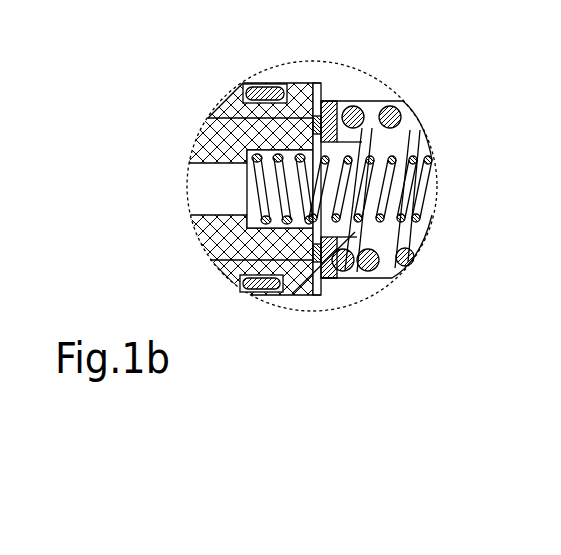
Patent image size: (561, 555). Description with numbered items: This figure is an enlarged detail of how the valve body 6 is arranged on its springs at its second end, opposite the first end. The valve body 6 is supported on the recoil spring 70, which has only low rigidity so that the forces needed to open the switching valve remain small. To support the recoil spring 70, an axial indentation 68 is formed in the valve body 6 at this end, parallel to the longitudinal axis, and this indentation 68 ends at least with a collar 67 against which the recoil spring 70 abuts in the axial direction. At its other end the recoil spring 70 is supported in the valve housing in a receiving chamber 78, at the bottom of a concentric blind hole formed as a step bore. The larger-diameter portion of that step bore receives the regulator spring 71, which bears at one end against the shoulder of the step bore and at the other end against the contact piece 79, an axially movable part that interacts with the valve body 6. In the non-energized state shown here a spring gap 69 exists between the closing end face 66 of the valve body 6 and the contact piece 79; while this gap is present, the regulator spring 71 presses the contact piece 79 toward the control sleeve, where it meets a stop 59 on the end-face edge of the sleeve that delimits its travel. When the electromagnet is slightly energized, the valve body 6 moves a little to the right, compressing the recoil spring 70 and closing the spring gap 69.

The valve body 6 is at (195, 237).
The axial indentation 68 is at (245, 282).
The collar 67 is at (247, 196).
The spring gap 69 is at (312, 300).
The stop 59 is at (318, 97).
The regulator spring 71 is at (365, 100).
The receiving chamber 78 is at (415, 130).
The recoil spring 70 is at (430, 197).
The closing end face 66 is at (318, 283).
The contact piece 79 is at (328, 283).